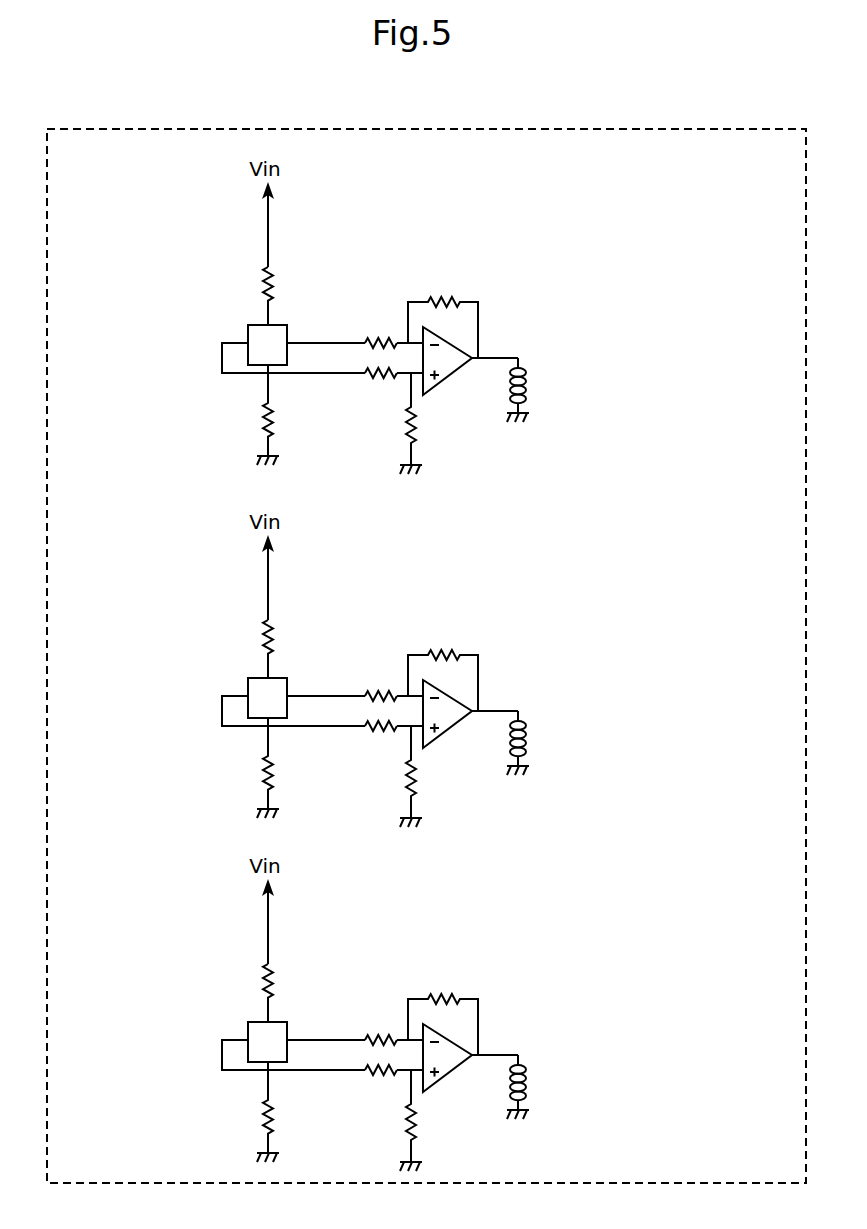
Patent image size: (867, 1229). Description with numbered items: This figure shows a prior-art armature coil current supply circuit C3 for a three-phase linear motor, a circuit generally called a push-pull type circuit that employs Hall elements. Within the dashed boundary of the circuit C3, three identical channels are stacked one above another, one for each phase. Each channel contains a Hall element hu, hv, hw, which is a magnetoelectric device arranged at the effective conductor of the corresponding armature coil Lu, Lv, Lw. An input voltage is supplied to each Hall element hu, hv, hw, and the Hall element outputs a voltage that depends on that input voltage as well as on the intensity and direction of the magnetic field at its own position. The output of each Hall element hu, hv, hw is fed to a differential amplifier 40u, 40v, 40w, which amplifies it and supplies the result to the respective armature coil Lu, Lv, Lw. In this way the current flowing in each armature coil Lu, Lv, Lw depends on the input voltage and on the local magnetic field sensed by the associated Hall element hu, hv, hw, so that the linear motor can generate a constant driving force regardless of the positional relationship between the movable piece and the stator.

The armature coil current supply circuit C3 is at (648, 128).
The Hall element hu is at (252, 328).
The Hall element hv is at (241, 670).
The Hall element hw is at (241, 1014).
The differential amplifier 40u is at (439, 287).
The differential amplifier 40v is at (443, 651).
The differential amplifier 40w is at (443, 995).
The armature coil Lu is at (524, 368).
The armature coil Lv is at (543, 717).
The armature coil Lw is at (545, 1061).